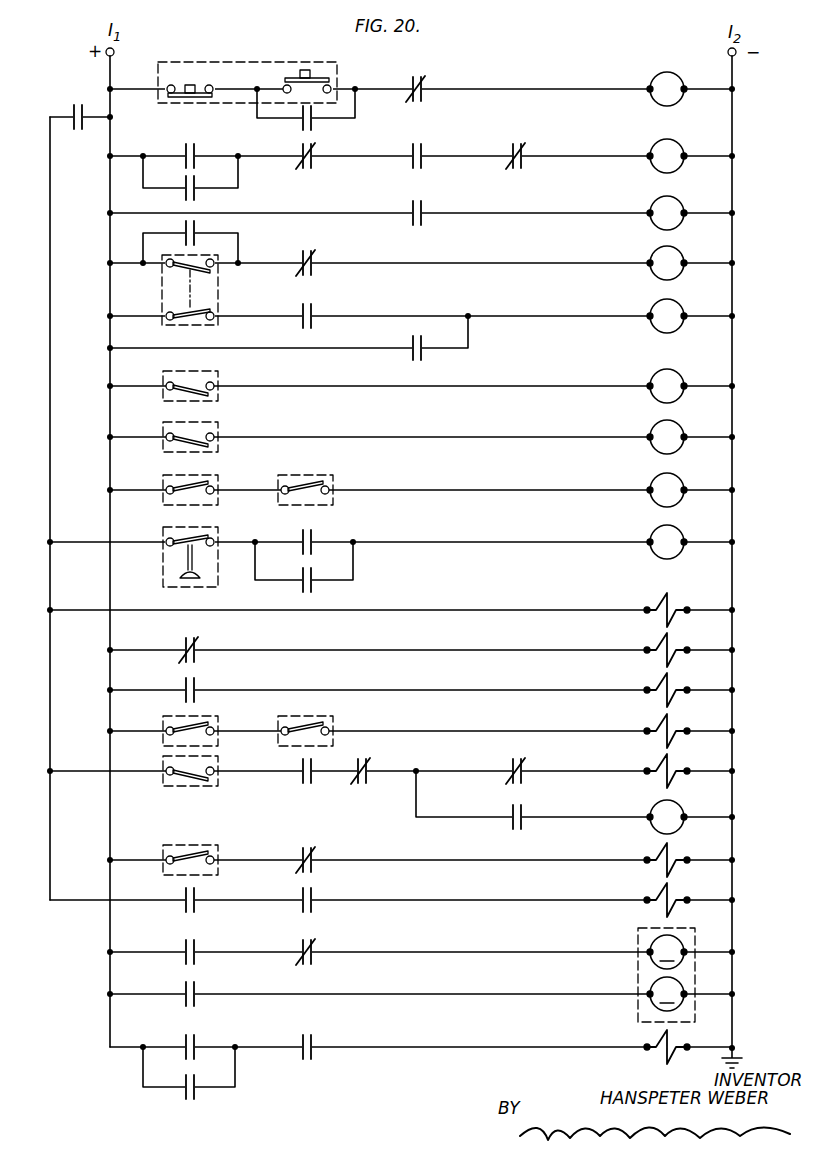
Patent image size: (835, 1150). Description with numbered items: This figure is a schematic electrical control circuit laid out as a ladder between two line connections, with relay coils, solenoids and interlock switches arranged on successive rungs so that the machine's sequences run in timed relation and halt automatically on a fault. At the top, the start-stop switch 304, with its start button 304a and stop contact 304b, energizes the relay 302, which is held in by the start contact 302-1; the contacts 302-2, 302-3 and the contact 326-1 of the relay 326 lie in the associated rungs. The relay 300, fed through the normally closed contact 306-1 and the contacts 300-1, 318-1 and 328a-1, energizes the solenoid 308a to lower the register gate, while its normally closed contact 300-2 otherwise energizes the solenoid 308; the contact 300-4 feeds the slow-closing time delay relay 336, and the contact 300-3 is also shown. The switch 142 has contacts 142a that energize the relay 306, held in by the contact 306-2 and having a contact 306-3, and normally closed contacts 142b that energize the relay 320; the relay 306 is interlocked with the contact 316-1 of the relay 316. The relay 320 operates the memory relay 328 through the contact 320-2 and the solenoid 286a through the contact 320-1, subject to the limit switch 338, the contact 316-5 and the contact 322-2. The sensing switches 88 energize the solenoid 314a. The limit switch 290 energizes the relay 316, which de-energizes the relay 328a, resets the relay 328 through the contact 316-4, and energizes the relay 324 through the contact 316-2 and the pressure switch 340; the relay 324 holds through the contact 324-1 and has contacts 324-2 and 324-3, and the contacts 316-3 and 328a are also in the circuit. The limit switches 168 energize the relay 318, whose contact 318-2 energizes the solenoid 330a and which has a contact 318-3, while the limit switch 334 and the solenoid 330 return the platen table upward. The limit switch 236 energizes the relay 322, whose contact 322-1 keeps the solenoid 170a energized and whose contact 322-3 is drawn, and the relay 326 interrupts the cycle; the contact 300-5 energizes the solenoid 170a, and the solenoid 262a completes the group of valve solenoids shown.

The contact of relay 302 302-2 is at (78, 103).
The start-stop switch 304 is at (279, 83).
The start button of switch 304 304a is at (331, 86).
The stop contact of switch 304 304b is at (195, 97).
The start contact 302-1 is at (302, 128).
The contact of relay 326 326-1 is at (428, 80).
The relay 302 is at (655, 78).
The contact of relay 302 302-3 is at (185, 148).
The contact of relay 300 300-1 is at (185, 196).
The normally closed contact of relay 306 306-1 is at (310, 178).
The contact of relay 318 318-1 is at (425, 140).
The contact of relay 328a 328a-1 is at (523, 140).
The relay 300 is at (662, 142).
The contact of relay 300 300-4 is at (425, 205).
The time delay relay 336 is at (656, 200).
The contact of relay 306 306-2 is at (197, 228).
The switch 142 is at (196, 290).
The contacts of switch 142 142a is at (214, 270).
The normally closed contacts of switch 142 142b is at (212, 308).
The contact of relay 316 316-1 is at (312, 250).
The relay 306 is at (656, 252).
The contact of relay 306 306-3 is at (312, 302).
The relay 320 is at (656, 304).
The relay 328a is at (424, 364).
The limit switch 290 is at (218, 376).
The relay 316 is at (656, 374).
The limit switch 236 is at (218, 428).
The relay 322 is at (654, 426).
The limit switches 168 is at (218, 474).
The relay 318 is at (656, 478).
The pressure switch 340 is at (215, 530).
The contact of relay 316 316-2 is at (315, 528).
The contact of relay 324 324-1 is at (315, 592).
The relay 324 is at (656, 532).
The solenoid 262a is at (658, 598).
The normally closed contact of relay 300 300-2 is at (197, 636).
The solenoid of valve 310 308 is at (658, 640).
The contact of relay 300 300-3 is at (197, 676).
The solenoid of valve 310 308a is at (658, 680).
The sensing switches 88 is at (218, 718).
The operating solenoid of valve 314 314a is at (658, 722).
The limit switch 338 is at (200, 788).
The contact of relay 320 320-1 is at (304, 788).
The contact of relay 316 316-5 is at (368, 758).
The contact of relay 322 322-2 is at (517, 758).
The solenoid of valve 286 286a is at (658, 762).
The contact of relay 322 322-3 is at (515, 832).
The relay 326 is at (655, 808).
The limit switch 334 is at (200, 846).
The contact of relay 324 324-2 is at (312, 846).
The solenoid of valve 332 330 is at (658, 850).
The contact of relay 318 318-2 is at (197, 912).
The contact of relay 324 324-3 is at (314, 912).
The solenoid of valve 330 330a is at (658, 892).
The contact of relay 320 320-2 is at (197, 964).
The contact of relay 316 316-3 is at (314, 964).
The mechanically latched relay 328 is at (630, 933).
The contact of relay 316 316-4 is at (197, 1006).
The contact of relay 300 300-5 is at (198, 1035).
The contact of relay 318 318-3 is at (314, 1060).
The solenoid of valve 170 170a is at (658, 1038).
The contact of relay 322 322-1 is at (195, 1100).